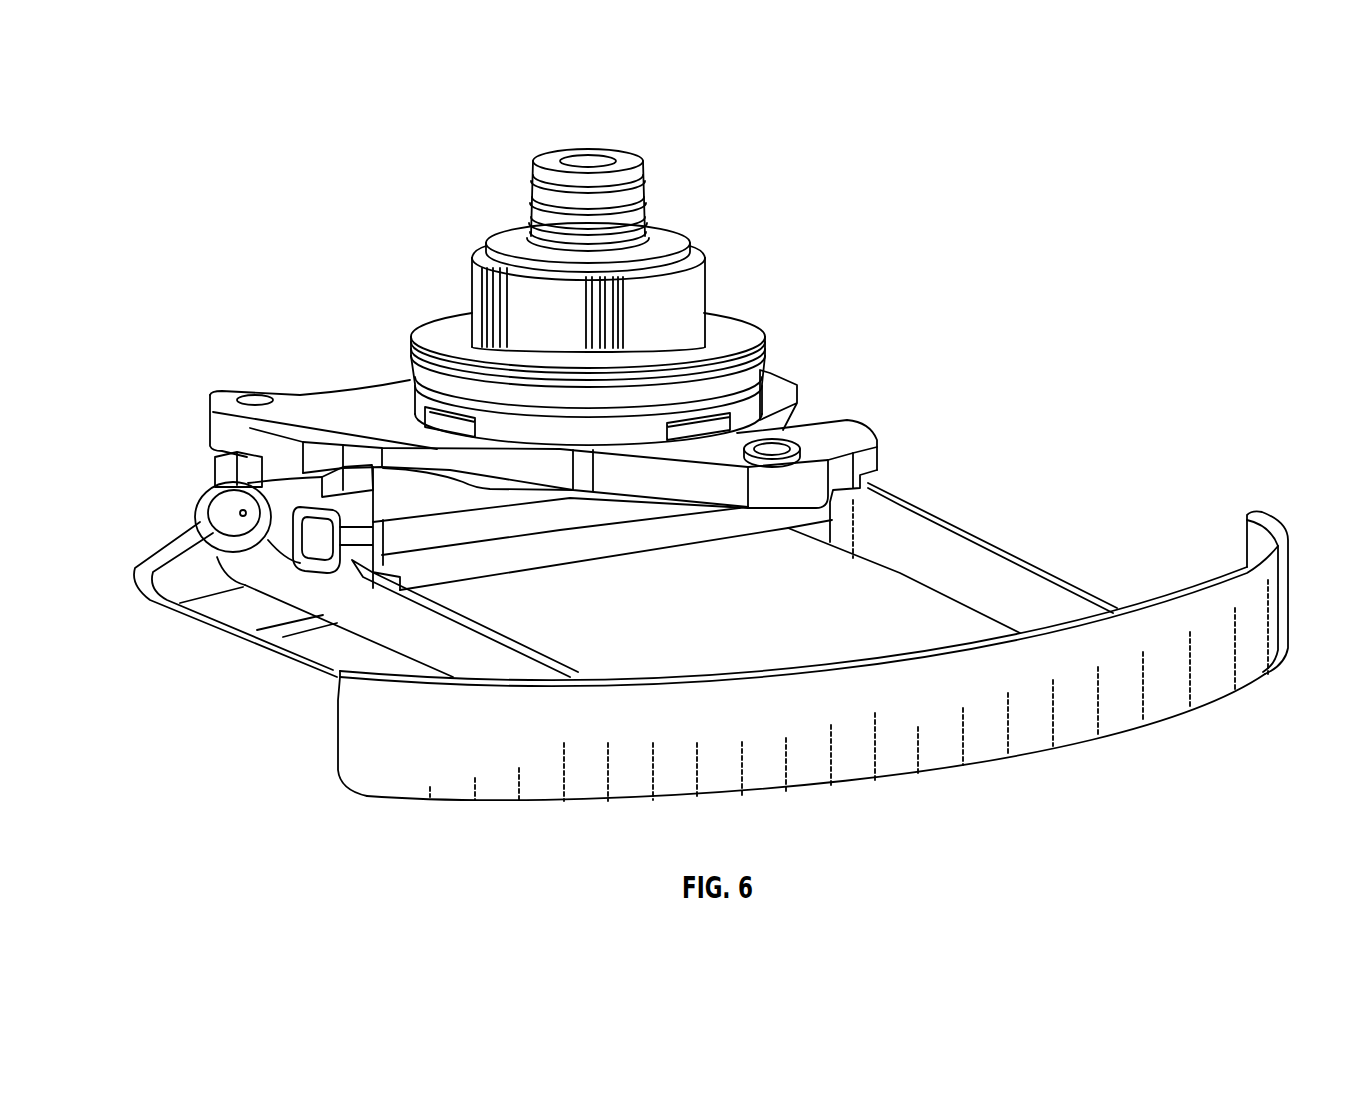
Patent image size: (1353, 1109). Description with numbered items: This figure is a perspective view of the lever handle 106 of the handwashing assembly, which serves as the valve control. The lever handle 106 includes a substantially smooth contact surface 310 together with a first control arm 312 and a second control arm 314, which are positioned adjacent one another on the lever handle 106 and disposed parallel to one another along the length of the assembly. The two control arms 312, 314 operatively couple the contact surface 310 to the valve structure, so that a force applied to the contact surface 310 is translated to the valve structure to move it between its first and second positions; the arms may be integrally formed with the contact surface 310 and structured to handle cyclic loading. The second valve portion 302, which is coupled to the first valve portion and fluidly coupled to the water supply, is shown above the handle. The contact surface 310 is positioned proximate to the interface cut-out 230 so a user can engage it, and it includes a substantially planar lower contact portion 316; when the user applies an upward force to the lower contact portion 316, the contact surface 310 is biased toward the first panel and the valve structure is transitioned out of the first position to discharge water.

The lever handle 106 is at (738, 565).
The interface cut-out 230 is at (892, 780).
The second valve portion 302 is at (680, 298).
The contact surface 310 is at (1023, 723).
The first control arm 312 is at (377, 663).
The second control arm 314 is at (1037, 592).
The lower contact portion 316 is at (1140, 718).